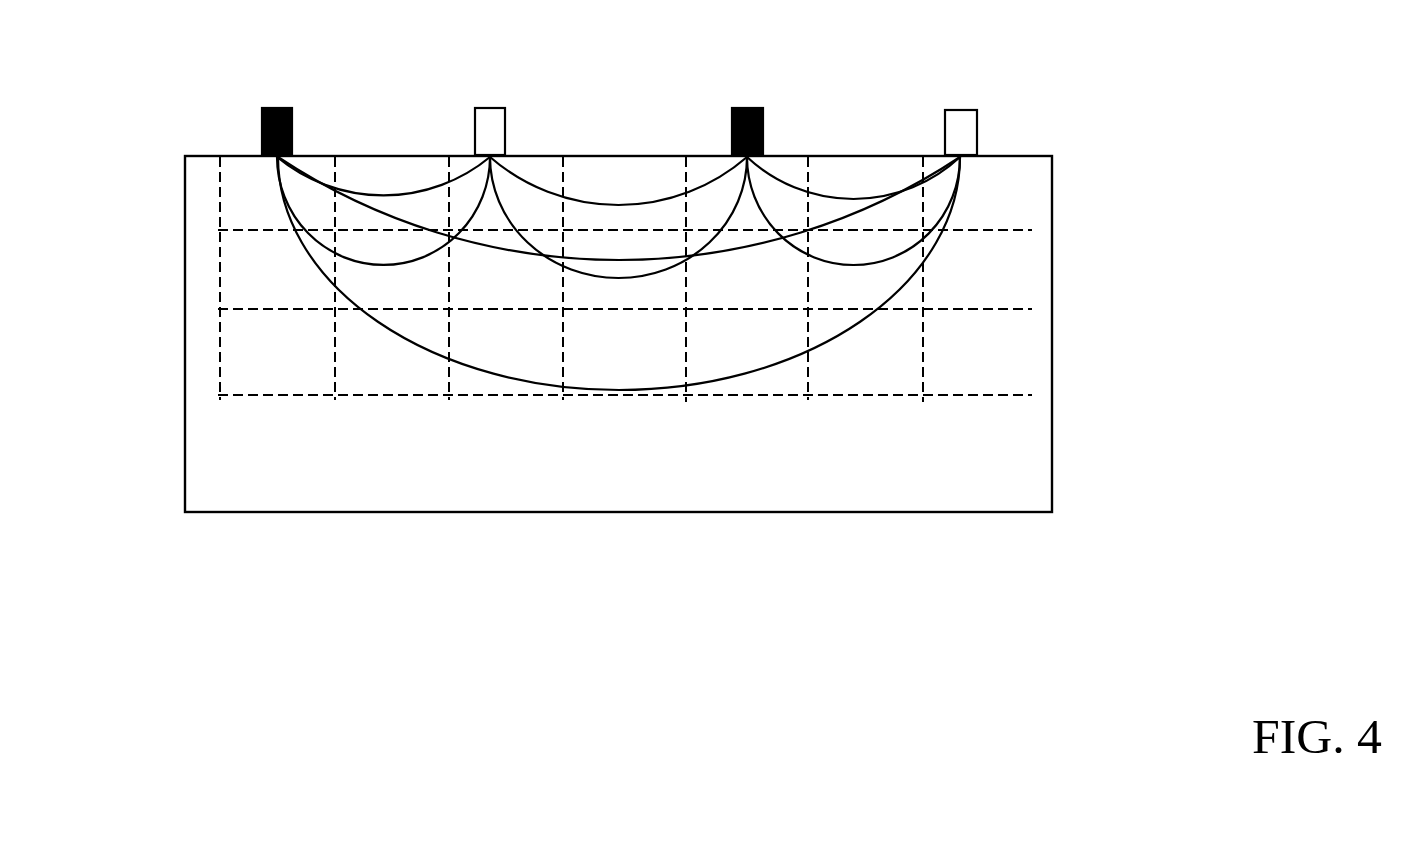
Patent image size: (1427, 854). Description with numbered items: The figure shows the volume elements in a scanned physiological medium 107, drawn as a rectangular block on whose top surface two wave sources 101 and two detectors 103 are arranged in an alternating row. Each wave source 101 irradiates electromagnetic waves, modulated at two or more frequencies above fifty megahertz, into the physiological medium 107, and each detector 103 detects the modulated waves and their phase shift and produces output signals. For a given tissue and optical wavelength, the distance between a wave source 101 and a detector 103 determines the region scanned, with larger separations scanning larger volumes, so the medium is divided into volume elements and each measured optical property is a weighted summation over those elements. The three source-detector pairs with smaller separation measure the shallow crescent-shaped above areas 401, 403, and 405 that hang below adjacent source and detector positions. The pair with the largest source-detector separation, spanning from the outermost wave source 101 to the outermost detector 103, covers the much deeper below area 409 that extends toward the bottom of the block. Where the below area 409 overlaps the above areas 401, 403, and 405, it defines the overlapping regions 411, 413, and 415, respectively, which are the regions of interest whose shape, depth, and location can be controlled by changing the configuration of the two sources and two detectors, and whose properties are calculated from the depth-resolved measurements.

The wave source 101 is at (278, 110).
The detector 103 is at (492, 108).
The physiological medium 107 is at (983, 480).
The above area 401 is at (398, 202).
The above area 403 is at (672, 218).
The above area 405 is at (807, 232).
The below area 409 is at (504, 344).
The overlapping region 411 is at (323, 200).
The overlapping region 413 is at (625, 263).
The overlapping region 415 is at (853, 249).